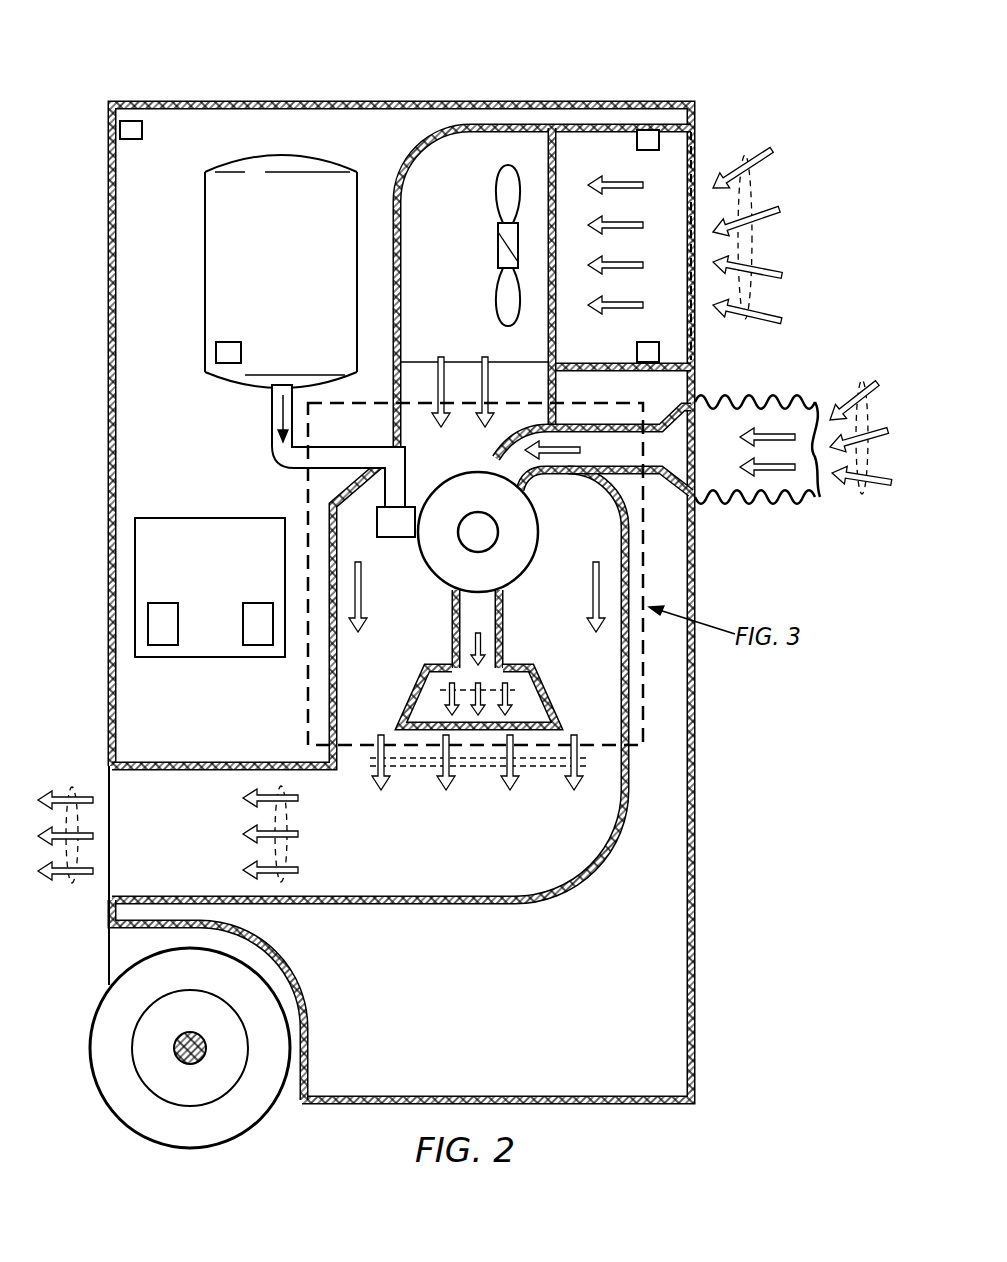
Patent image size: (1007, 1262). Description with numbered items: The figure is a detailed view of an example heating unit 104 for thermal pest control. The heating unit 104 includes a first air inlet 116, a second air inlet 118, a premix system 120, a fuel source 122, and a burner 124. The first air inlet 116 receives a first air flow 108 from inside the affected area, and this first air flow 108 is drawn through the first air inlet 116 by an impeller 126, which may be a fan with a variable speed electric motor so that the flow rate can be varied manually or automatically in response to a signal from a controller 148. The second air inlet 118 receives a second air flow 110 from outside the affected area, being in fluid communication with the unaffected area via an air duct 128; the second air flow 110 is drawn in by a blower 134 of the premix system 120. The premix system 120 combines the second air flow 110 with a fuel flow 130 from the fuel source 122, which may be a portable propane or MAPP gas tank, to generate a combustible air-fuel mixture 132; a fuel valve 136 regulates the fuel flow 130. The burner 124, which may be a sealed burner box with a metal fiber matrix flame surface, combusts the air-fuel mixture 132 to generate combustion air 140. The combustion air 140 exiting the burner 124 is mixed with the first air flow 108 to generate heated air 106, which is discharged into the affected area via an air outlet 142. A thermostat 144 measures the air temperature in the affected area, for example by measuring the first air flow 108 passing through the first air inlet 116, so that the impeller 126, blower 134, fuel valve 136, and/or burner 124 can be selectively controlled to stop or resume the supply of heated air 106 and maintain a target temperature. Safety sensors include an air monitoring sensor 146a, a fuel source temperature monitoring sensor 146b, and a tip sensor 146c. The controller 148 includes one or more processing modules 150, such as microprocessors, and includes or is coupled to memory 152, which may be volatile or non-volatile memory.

The heating unit 104 is at (288, 62).
The heated air 106 is at (532, 769).
The first air flow 108 is at (752, 200).
The second air flow 110 is at (848, 405).
The first air inlet 116 is at (697, 160).
The second air inlet 118 is at (697, 440).
The premix system 120 is at (484, 578).
The fuel source 122 is at (299, 283).
The burner 124 is at (527, 668).
The impeller 126 is at (477, 207).
The air duct 128 is at (762, 502).
The fuel flow 130 is at (272, 410).
The air-fuel mixture 132 is at (455, 640).
The blower 134 is at (432, 487).
The fuel valve 136 is at (393, 540).
The combustion air 140 is at (545, 695).
The air outlet 142 is at (108, 790).
The thermostat 144 is at (637, 352).
The air monitoring sensor 146a is at (650, 130).
The fuel source temperature monitoring sensor 146b is at (243, 350).
The tip sensor 146c is at (142, 130).
The controller 148 is at (192, 613).
The processing modules 150 is at (162, 646).
The memory 152 is at (258, 646).